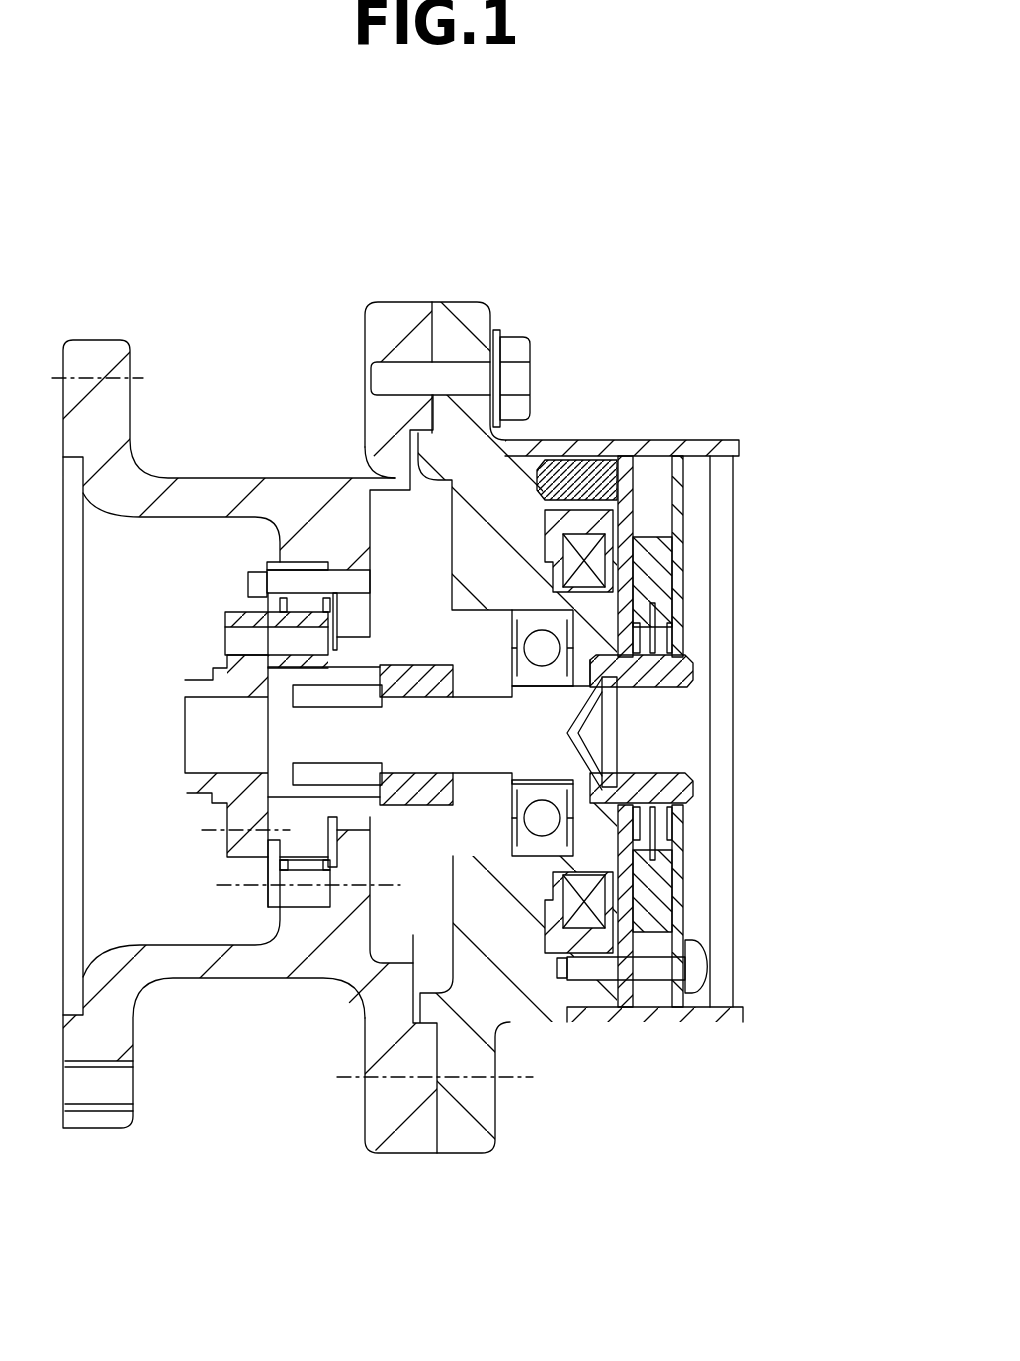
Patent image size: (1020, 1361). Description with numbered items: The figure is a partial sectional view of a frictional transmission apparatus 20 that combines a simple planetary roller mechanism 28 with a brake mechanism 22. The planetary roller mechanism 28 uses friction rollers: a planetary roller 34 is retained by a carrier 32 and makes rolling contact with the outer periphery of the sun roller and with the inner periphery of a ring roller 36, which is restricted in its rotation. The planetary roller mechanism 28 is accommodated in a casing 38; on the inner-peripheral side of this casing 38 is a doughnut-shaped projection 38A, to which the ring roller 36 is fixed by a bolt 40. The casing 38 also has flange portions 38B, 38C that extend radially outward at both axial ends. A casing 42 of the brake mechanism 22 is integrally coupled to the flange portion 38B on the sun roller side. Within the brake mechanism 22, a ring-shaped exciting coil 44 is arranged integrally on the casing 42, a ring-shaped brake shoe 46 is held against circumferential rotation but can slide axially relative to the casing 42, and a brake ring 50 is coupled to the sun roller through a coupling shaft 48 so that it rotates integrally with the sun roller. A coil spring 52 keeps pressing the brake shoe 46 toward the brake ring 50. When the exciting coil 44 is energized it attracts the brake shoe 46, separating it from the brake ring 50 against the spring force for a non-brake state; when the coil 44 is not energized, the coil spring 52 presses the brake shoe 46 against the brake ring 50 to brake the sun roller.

The frictional transmission apparatus 20 is at (655, 244).
The brake mechanism 22 is at (762, 1046).
The simple planetary roller mechanism 28 is at (188, 806).
The carrier 32 is at (210, 678).
The planetary roller 34 is at (270, 613).
The ring roller 36 is at (305, 560).
The casing 38 is at (250, 968).
The doughnut-shaped projection 38A is at (282, 858).
The flange portion 38B is at (408, 1147).
The flange portion 38C is at (100, 1112).
The bolt 40 is at (250, 572).
The casing 42 is at (517, 1020).
The exciting coil 44 is at (593, 955).
The brake shoe 46 is at (636, 457).
The coupling shaft 48 is at (673, 790).
The brake ring 50 is at (650, 566).
The coil spring 52 is at (580, 462).